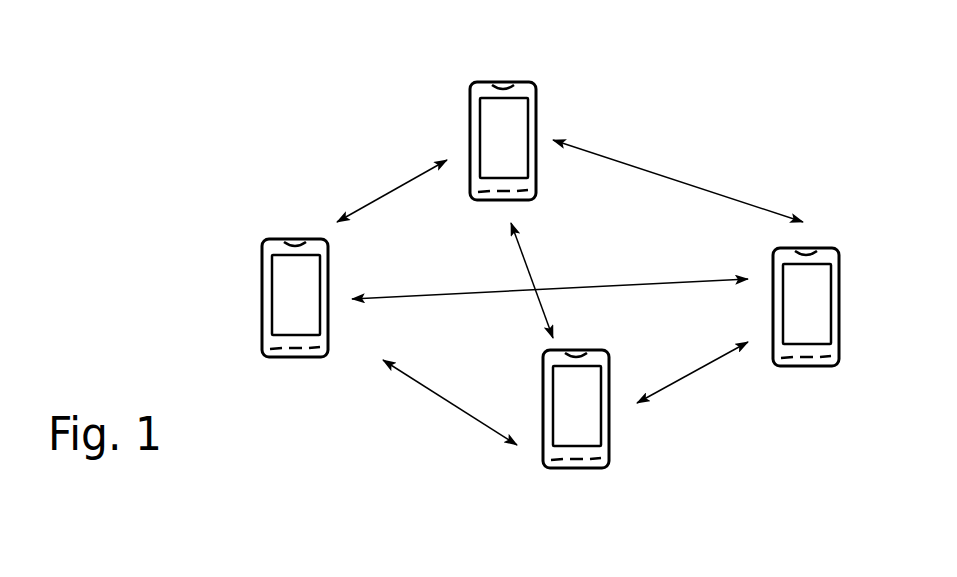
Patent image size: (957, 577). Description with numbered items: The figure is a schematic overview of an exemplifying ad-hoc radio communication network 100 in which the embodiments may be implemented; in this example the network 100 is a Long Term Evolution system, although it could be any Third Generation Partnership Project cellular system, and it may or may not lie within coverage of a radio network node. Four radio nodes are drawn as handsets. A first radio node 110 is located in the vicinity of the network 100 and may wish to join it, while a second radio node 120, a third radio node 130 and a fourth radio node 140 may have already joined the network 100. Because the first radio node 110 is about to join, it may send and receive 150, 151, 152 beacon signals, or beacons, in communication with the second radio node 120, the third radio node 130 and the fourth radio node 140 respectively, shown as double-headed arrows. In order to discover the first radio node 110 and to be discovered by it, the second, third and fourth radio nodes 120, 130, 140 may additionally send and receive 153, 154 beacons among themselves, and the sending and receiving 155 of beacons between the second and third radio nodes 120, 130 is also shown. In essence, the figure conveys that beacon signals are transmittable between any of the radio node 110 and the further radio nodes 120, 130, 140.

The ad-hoc radio communication network 100 is at (262, 158).
The first radio node 110 is at (295, 298).
The second radio node 120 is at (503, 141).
The third radio node 130 is at (576, 409).
The fourth radio node 140 is at (806, 307).
The sending and receiving of beacon signals 150 is at (392, 191).
The sending and receiving of beacon signals 151 is at (450, 402).
The sending and receiving of beacon signals 152 is at (550, 281).
The sending and receiving of beacons 153 is at (678, 181).
The sending and receiving of beacons 154 is at (692, 378).
The sending and receiving of beacons 155 is at (542, 280).